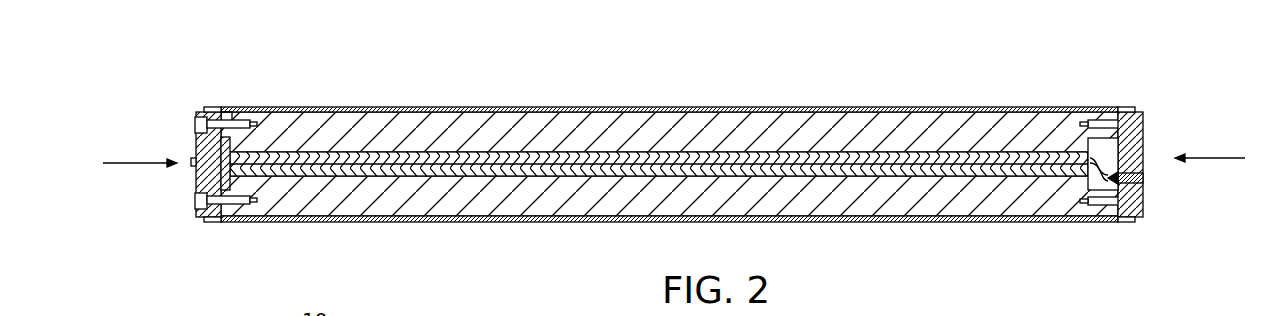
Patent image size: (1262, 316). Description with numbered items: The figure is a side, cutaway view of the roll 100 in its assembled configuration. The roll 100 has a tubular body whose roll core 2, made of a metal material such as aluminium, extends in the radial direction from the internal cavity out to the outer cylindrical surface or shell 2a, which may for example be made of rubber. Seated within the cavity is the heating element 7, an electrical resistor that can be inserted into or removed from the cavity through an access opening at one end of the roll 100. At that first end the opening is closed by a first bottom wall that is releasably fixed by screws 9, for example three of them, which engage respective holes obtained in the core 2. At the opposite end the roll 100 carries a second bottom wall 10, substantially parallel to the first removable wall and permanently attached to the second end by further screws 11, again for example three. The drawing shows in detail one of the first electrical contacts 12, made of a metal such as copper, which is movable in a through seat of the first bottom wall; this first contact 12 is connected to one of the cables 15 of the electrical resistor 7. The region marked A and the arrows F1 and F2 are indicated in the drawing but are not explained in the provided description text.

The roll 100 is at (423, 281).
The roll core 2 is at (553, 132).
The outer cylindrical surface or shell 2a is at (808, 108).
The heating element 7 is at (705, 163).
The screws 9 is at (1122, 112).
The second bottom wall 10 is at (194, 148).
The further screws 11 is at (240, 112).
The first electrical contact 12 is at (1145, 178).
The cable 15 is at (1078, 214).
The detail region A is at (1148, 190).
The force F1 is at (1208, 158).
The force F2 is at (140, 162).